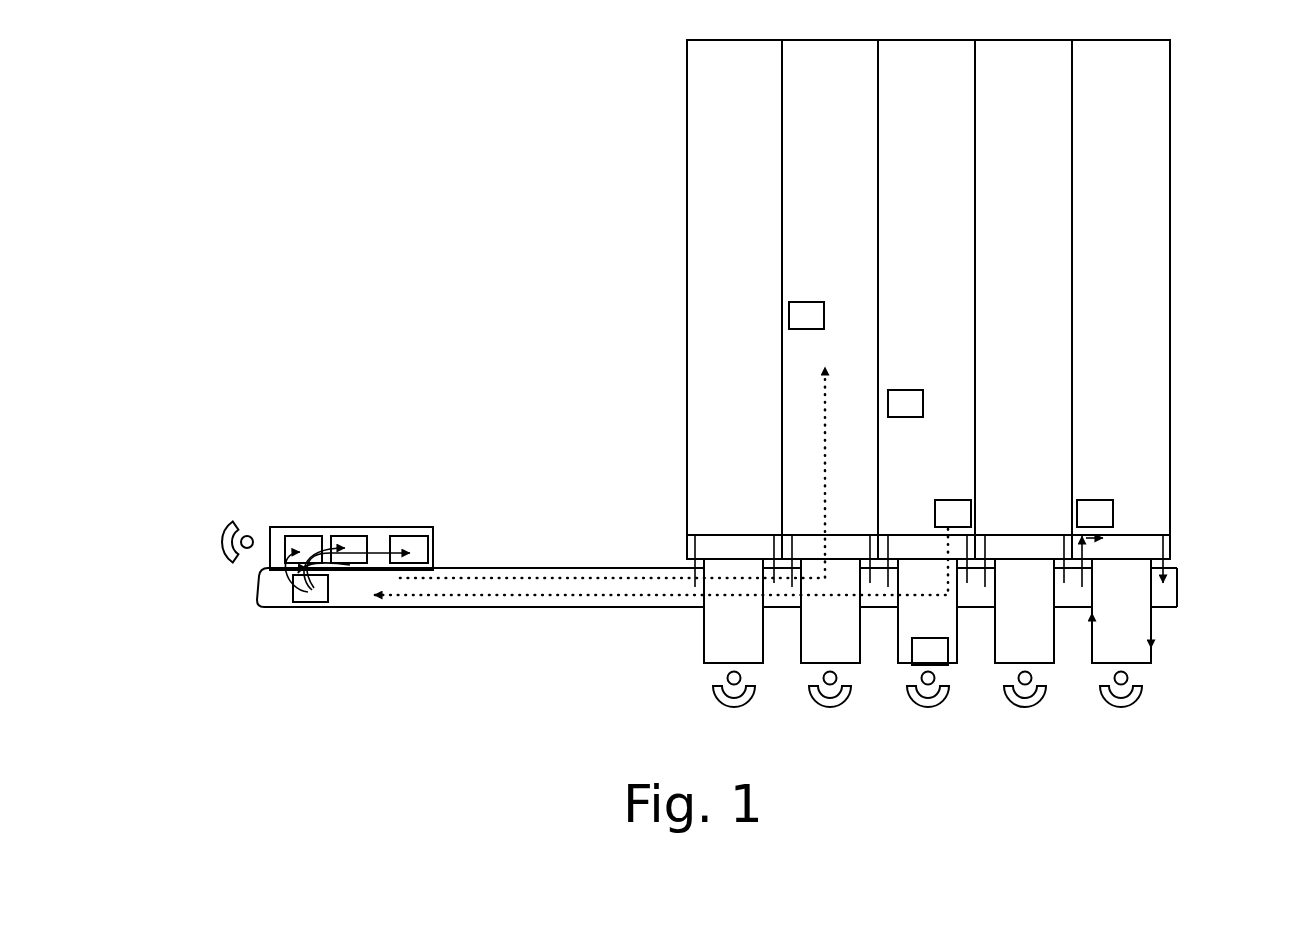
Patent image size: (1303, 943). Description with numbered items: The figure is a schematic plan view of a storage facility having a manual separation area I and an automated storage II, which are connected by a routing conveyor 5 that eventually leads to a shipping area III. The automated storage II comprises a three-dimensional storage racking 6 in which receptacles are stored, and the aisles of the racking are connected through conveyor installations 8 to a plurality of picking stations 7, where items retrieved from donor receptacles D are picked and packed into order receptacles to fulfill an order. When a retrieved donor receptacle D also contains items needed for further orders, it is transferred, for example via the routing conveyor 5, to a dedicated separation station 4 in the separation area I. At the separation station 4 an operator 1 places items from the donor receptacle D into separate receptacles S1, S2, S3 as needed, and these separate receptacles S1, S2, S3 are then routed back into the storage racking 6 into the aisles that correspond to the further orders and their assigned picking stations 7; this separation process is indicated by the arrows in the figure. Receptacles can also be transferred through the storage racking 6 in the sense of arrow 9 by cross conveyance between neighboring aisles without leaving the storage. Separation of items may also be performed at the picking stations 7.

The operator 1 is at (207, 540).
The separation station 4 is at (292, 508).
The routing conveyor 5 is at (1172, 572).
The storage racking 6 is at (1140, 135).
The picking station 7 is at (776, 678).
The conveyor installation 8 is at (1157, 650).
The arrow (cross transfer direction) 9 is at (1023, 533).
The separation area I is at (218, 418).
The automated storage II is at (1186, 362).
The shipping area III is at (1180, 588).
The separate receptacle S1 is at (300, 547).
The separate receptacle S2 is at (357, 548).
The separate receptacle S3 is at (414, 547).
The donor receptacle D is at (310, 604).